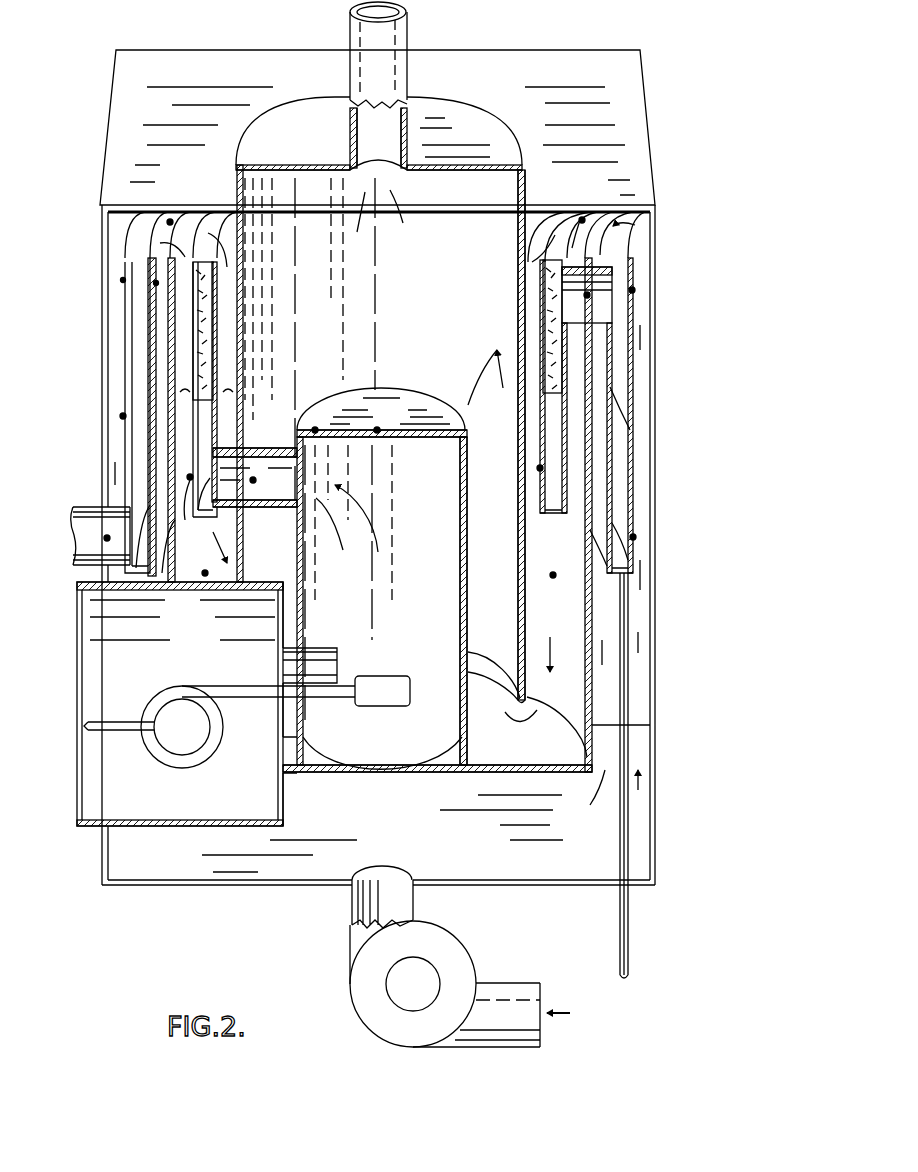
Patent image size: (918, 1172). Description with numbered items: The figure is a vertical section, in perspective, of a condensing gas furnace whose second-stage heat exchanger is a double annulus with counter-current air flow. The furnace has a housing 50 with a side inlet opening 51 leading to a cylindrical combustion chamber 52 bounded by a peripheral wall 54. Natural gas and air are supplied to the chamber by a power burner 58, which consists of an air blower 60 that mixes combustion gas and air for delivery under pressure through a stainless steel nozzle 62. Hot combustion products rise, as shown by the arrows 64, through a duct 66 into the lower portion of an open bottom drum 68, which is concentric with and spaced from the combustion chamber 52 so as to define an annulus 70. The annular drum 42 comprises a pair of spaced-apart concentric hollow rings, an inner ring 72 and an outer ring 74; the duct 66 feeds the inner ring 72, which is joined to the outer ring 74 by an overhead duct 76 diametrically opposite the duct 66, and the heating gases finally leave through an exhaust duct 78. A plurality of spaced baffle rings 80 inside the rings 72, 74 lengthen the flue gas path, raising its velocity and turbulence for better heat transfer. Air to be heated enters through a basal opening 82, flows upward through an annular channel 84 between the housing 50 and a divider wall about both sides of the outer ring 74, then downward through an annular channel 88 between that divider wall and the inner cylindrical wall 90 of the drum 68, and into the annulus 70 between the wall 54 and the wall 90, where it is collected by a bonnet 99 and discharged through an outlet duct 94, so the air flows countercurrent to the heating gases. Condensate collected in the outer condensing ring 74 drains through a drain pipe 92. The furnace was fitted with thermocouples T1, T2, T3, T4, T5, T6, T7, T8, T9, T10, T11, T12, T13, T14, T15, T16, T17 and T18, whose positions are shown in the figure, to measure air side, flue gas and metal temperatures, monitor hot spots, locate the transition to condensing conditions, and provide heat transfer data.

The annular drum 42 is at (222, 370).
The housing 50 is at (658, 504).
The side inlet opening 51 is at (120, 656).
The cylindrical combustion chamber 52 is at (366, 616).
The peripheral wall 54 is at (460, 498).
The power burner 58 is at (181, 684).
The air blower 60 is at (205, 760).
The stainless steel nozzle 62 is at (386, 676).
The arrows 64 is at (353, 532).
The duct 66 is at (265, 448).
The open bottom drum 68 is at (243, 247).
The annulus 70 is at (503, 557).
The inner ring 72 is at (213, 330).
The outer ring 74 is at (156, 308).
The overhead duct 76 is at (600, 257).
The exhaust duct 78 is at (92, 507).
The baffle rings 80 is at (130, 420).
The basal opening 82 is at (476, 857).
The annular channel 84 is at (637, 668).
The annular channel 88 is at (558, 586).
The inner cylindrical wall 90 is at (520, 320).
The drain pipe 92 is at (630, 922).
The outlet duct 94 is at (405, 35).
The bonnet 99 is at (478, 132).
The thermocouple T1 is at (107, 538).
The thermocouple T2 is at (123, 416).
The thermocouple T3 is at (120, 280).
The thermocouple T4 is at (170, 222).
The thermocouple T5 is at (153, 284).
The thermocouple T6 is at (188, 403).
The thermocouple T7 is at (230, 403).
The thermocouple T8 is at (190, 477).
The thermocouple T9 is at (205, 573).
The thermocouple T10 is at (256, 480).
The thermocouple T11 is at (315, 430).
The thermocouple T12 is at (377, 430).
The thermocouple T13 is at (562, 550).
The thermocouple T14 is at (540, 468).
The thermocouple T15 is at (582, 220).
The thermocouple T16 is at (587, 295).
The thermocouple T17 is at (632, 290).
The thermocouple T18 is at (633, 537).